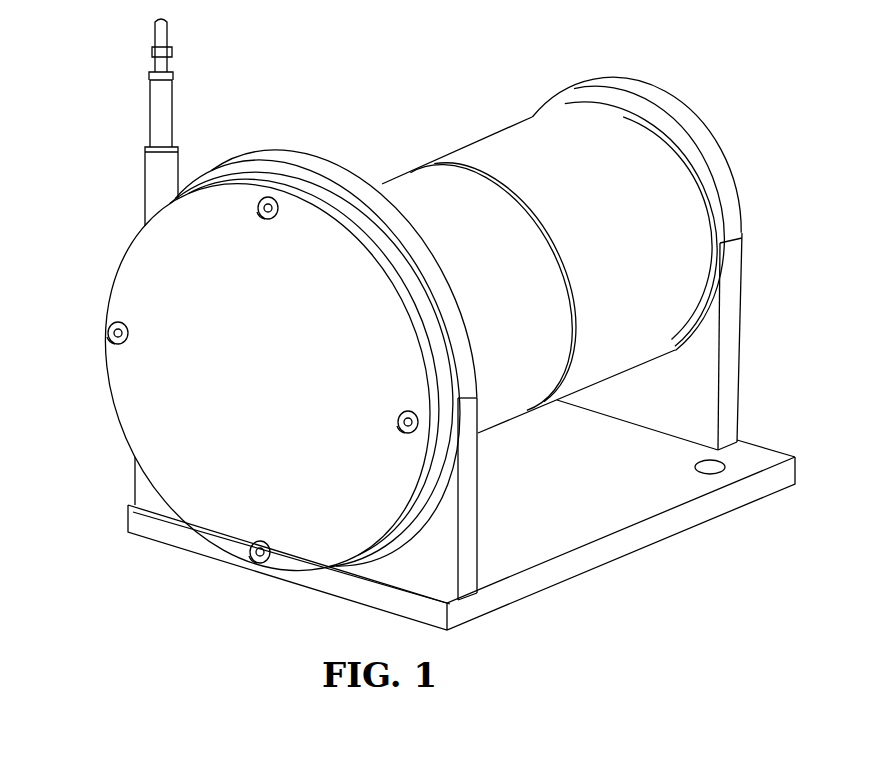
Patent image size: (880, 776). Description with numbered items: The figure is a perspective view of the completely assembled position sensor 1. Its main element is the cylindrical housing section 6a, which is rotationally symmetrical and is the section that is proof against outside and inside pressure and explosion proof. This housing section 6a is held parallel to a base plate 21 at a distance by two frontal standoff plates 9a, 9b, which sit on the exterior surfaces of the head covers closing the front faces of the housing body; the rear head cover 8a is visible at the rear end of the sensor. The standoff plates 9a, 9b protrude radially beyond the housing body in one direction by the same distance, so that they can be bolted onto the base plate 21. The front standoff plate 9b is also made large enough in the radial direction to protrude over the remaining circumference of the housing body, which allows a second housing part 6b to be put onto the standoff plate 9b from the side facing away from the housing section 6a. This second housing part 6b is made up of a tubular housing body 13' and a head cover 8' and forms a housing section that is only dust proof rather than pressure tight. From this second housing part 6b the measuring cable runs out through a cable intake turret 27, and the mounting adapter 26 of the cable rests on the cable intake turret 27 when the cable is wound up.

The sensor 1 is at (338, 78).
The cylindrical housing section 6a is at (507, 146).
The second housing part 6b is at (215, 146).
The head cover 8' is at (260, 376).
The head cover 8a is at (638, 113).
The standoff plate 9a is at (653, 97).
The standoff plate 9b is at (320, 163).
The tubular housing body 13' is at (335, 530).
The base plate 21 is at (578, 500).
The mounting adapter 26 is at (167, 38).
The cable intake turret 27 is at (165, 176).